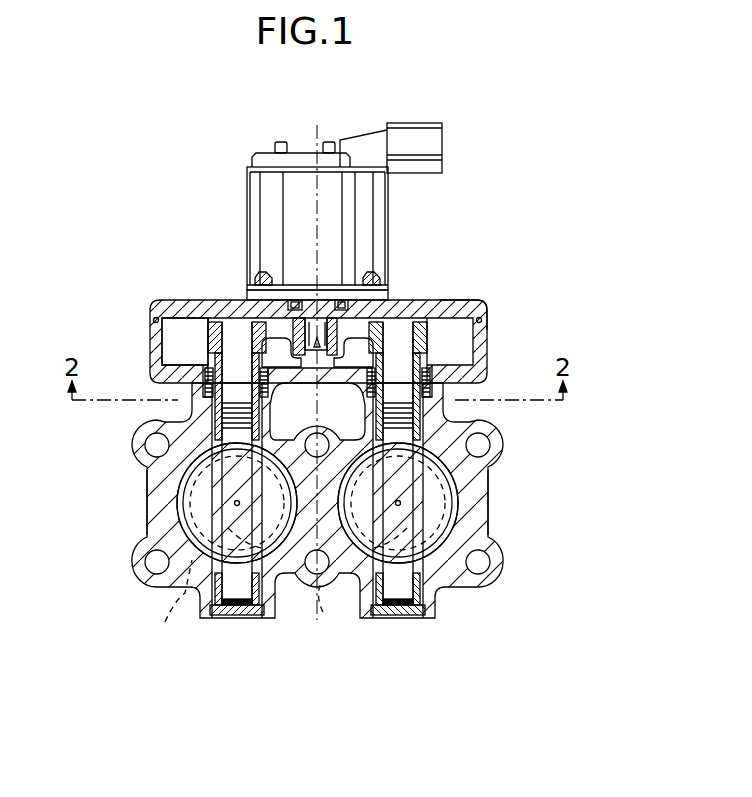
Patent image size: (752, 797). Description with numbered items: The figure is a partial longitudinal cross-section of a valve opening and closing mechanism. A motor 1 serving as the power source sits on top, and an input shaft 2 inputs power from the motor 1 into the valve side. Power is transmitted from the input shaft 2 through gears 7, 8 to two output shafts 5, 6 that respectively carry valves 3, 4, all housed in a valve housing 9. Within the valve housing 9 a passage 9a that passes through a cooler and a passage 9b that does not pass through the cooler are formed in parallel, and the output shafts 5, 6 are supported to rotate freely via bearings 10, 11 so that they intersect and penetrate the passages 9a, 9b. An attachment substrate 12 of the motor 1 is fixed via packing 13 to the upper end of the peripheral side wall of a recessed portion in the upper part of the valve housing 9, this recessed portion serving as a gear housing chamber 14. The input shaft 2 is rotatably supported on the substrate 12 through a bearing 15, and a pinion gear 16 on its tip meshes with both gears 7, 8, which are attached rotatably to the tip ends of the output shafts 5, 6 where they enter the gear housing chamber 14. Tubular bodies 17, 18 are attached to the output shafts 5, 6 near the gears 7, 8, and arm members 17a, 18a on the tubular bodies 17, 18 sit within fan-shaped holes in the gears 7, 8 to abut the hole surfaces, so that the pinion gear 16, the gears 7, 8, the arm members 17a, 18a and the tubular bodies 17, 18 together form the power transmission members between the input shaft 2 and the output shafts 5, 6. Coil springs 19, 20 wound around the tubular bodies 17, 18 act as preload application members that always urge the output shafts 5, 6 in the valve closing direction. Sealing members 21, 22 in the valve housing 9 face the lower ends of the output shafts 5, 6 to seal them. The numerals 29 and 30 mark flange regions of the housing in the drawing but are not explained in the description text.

The motor 1 is at (303, 180).
The input shaft 2 is at (312, 318).
The valve 3 is at (205, 514).
The valve 4 is at (435, 497).
The output shaft 5 is at (228, 600).
The output shaft 6 is at (397, 603).
The gear 7 is at (224, 330).
The gear 8 is at (418, 325).
The valve housing 9 is at (153, 482).
The passage 9a is at (169, 605).
The passage 9b is at (326, 616).
The bearing 10 is at (210, 422).
The bearing 11 is at (425, 412).
The attachment substrate 12 is at (467, 304).
The packing 13 is at (158, 322).
The gear housing chamber 14 is at (187, 336).
The bearing 15 is at (293, 305).
The pinion gear 16 is at (387, 307).
The tubular body 17 is at (215, 352).
The arm member 17a is at (279, 345).
The tubular body 18 is at (420, 376).
The arm member 18a is at (384, 348).
The coil spring 19 is at (207, 367).
The coil spring 20 is at (422, 368).
The sealing member 21 is at (248, 617).
The sealing member 22 is at (388, 617).
The first flange 29 is at (142, 547).
The second flange 30 is at (458, 533).